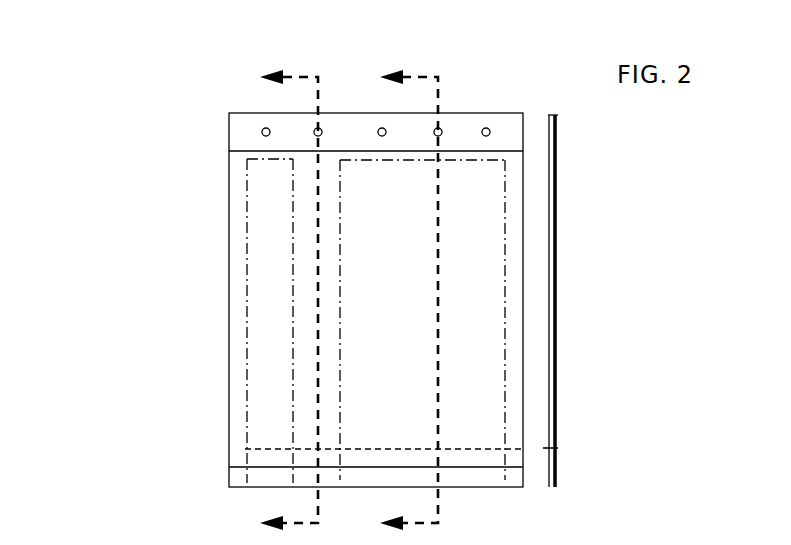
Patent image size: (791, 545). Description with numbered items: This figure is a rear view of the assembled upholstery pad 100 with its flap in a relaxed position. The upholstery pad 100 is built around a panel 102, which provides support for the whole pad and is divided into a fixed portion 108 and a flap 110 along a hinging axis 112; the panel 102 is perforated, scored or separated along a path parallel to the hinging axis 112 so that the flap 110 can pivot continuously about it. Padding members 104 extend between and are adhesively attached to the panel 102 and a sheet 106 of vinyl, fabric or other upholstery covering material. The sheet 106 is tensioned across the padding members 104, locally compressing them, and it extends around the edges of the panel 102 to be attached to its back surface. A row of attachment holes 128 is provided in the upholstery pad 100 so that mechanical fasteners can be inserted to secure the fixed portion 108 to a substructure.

The upholstery pad 100 is at (137, 45).
The panel 102 is at (237, 233).
The padding members 104 is at (262, 300).
The sheet 106 is at (242, 138).
The fixed portion 108 is at (556, 300).
The flap 110 is at (557, 466).
The hinging axis 112 is at (246, 449).
The attachment holes 128 is at (263, 127).